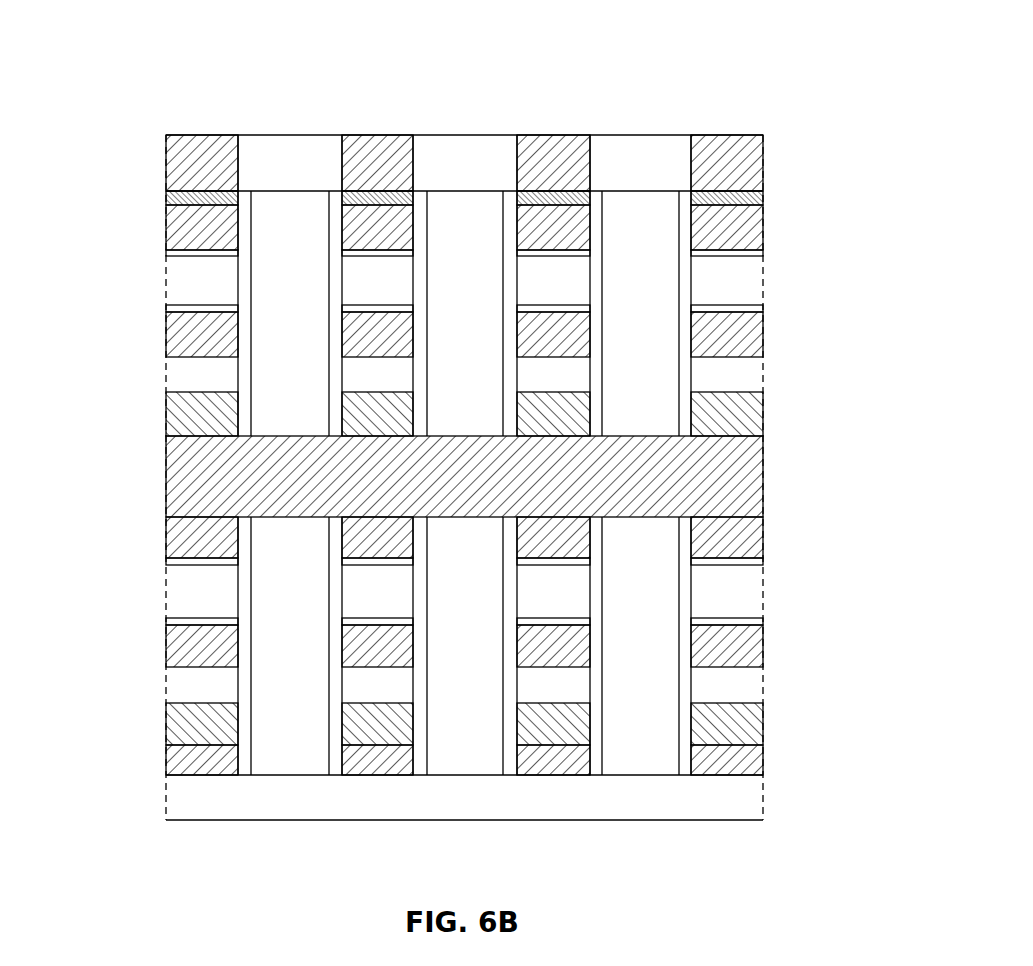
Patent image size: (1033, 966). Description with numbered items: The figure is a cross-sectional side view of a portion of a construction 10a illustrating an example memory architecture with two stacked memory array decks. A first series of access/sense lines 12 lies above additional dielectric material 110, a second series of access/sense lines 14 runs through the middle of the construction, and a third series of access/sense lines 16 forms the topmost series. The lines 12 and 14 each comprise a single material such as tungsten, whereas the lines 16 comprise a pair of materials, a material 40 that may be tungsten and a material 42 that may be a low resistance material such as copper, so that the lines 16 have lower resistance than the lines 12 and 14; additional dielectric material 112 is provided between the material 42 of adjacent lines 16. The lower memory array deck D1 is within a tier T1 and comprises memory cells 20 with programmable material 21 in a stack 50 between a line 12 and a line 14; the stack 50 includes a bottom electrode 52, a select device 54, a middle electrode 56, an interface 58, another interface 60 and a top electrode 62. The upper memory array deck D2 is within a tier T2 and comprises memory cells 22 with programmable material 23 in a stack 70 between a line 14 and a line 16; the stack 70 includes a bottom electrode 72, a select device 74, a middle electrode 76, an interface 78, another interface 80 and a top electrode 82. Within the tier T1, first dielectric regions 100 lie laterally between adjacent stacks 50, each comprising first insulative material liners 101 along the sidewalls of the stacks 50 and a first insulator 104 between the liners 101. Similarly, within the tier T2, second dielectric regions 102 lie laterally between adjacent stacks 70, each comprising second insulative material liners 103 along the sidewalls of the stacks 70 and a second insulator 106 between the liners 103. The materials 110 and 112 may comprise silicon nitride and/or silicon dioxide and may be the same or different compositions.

The construction 10a is at (779, 77).
The first series of access/sense lines 12 is at (166, 757).
The second series of access/sense lines 14 is at (168, 475).
The third series of access/sense lines 16 is at (148, 135).
The memory cells of memory array deck D1 20 is at (252, 591).
The programmable material 21 is at (212, 602).
The memory cells of memory array deck D2 22 is at (244, 279).
The programmable material 23 is at (212, 291).
The material 40 is at (166, 199).
The material 42 is at (213, 173).
The stack 50 is at (142, 745).
The bottom electrode 52 is at (166, 721).
The select device 54 is at (166, 686).
The middle electrode 56 is at (166, 648).
The interface 58 is at (166, 622).
The interface 60 is at (166, 563).
The top electrode 62 is at (166, 541).
The stack 70 is at (148, 436).
The bottom electrode 72 is at (244, 416).
The select device 74 is at (244, 375).
The middle electrode 76 is at (244, 340).
The interface 78 is at (244, 308).
The interface 80 is at (244, 252).
The top electrode 82 is at (244, 218).
The first dielectric regions 100 is at (342, 779).
The first insulative material liners 101 is at (328, 758).
The second dielectric regions 102 is at (517, 183).
The second insulative material liners 103 is at (335, 428).
The first insulator 104 is at (308, 644).
The second insulator 106 is at (328, 291).
The additional dielectric material 110 is at (745, 812).
The additional dielectric material 112 is at (329, 162).
The memory array deck D1 is at (152, 597).
The memory array deck D2 is at (125, 283).
The tier T1 is at (766, 820).
The tier T2 is at (766, 518).